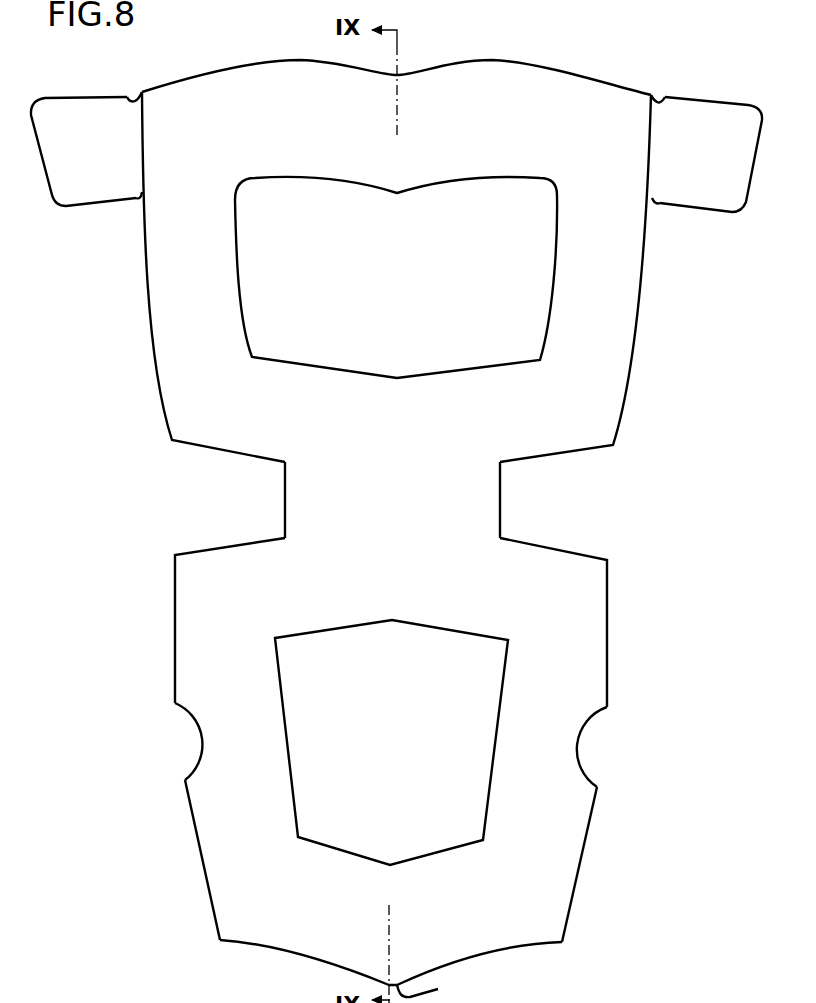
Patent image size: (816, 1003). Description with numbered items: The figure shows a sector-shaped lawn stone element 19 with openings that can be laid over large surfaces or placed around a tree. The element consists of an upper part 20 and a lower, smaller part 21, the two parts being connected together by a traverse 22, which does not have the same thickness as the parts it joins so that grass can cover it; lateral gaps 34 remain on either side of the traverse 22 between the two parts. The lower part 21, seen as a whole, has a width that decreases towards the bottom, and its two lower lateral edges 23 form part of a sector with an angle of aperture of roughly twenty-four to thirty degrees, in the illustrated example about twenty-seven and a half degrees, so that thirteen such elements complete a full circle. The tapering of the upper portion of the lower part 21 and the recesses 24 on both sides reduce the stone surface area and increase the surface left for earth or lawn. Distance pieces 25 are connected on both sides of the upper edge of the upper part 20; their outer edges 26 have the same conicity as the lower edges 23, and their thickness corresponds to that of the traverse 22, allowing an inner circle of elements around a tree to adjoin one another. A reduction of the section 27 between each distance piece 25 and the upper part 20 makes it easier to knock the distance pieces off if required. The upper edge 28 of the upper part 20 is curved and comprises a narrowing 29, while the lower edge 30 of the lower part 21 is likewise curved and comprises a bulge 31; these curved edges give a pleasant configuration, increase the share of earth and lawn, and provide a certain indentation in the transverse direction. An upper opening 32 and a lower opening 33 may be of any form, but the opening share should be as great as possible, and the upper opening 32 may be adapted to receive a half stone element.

The blank 19 is at (690, 66).
The upper part 20 is at (134, 355).
The lower part 21 is at (168, 679).
The traverse 22 is at (403, 511).
The lower lateral edges 23 is at (200, 861).
The recesses 24 is at (193, 744).
The distance pieces 25 is at (78, 183).
The outer edges 26 is at (36, 164).
The reduction of the section 27 is at (135, 92).
The upper edge 28 is at (494, 58).
The narrowing 29 is at (403, 70).
The lower edge 30 is at (287, 952).
The bulge 31 is at (436, 986).
The upper opening 32 is at (244, 293).
The lower opening 33 is at (296, 759).
The side gap 34 is at (247, 497).